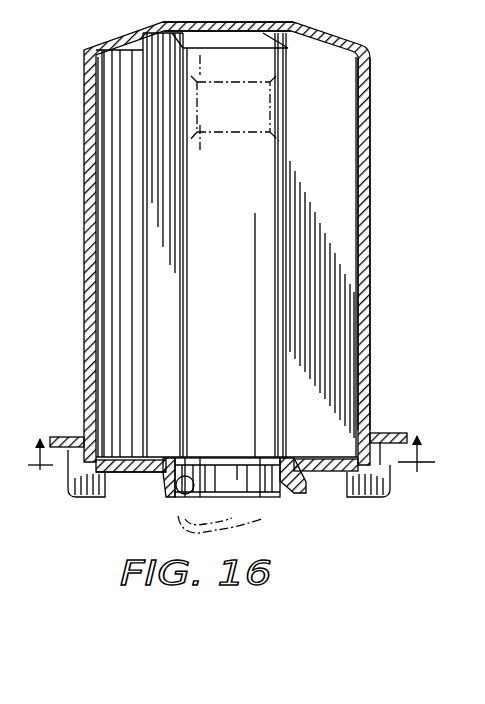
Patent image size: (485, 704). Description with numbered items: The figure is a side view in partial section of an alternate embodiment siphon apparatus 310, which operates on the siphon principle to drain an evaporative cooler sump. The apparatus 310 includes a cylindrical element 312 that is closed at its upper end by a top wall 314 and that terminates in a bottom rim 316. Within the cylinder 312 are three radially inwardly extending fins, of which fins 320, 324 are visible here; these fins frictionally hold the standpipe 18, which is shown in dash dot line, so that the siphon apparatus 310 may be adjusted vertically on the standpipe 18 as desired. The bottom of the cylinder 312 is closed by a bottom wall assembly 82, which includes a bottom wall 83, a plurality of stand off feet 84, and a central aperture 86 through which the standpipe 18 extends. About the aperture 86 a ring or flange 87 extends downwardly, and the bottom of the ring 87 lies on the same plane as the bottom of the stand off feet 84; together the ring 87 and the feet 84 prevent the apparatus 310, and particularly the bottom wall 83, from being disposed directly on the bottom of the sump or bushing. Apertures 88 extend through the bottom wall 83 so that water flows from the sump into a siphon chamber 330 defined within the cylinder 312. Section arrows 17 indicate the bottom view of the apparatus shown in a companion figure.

The siphon apparatus 310 is at (373, 163).
The cylindrical element 312 is at (369, 221).
The top wall 314 is at (341, 36).
The bottom rim 316 is at (345, 479).
The fin 320 is at (302, 390).
The fin 324 is at (181, 342).
The siphon chamber 330 is at (343, 118).
The standpipe 18 is at (240, 96).
The section line for bottom view 17 is at (231, 466).
The bottom wall assembly 82 is at (74, 431).
The bottom wall 83 is at (109, 473).
The stand off feet 84 is at (86, 498).
The central aperture 86 is at (185, 492).
The ring or flange 87 is at (300, 494).
The apertures 88 is at (321, 471).